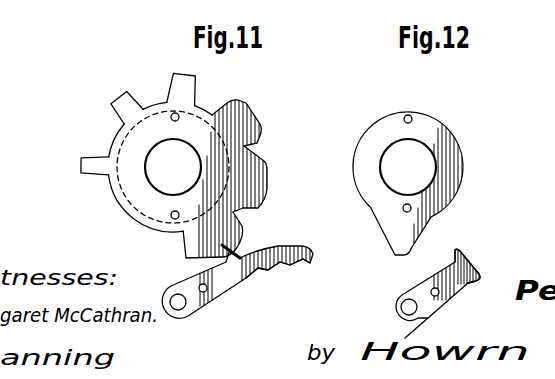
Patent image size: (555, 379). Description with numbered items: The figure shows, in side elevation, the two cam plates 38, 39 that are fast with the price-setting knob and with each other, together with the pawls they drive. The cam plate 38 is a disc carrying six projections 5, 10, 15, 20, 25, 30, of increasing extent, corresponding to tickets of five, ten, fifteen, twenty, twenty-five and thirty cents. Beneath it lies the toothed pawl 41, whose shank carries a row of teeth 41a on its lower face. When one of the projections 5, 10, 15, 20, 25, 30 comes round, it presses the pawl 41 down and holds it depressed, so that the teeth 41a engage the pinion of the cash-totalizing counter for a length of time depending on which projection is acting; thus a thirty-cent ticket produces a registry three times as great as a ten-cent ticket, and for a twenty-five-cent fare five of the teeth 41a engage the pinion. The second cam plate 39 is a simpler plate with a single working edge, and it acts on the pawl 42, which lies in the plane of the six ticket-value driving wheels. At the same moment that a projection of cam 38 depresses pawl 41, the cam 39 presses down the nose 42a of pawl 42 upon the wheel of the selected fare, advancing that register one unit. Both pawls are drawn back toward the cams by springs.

In FIG. 11, the cam projection for five-cent tickets 5 is at (95, 166).
In FIG. 11, the cam projection for ten-cent tickets 10 is at (127, 108).
In FIG. 11, the cam projection for fifteen-cent tickets 15 is at (181, 89).
In FIG. 11, the cam projection for twenty-cent tickets 20 is at (236, 123).
In FIG. 11, the cam projection for twenty-five-cent tickets 25 is at (250, 179).
In FIG. 11, the cam projection for thirty-cent tickets 30 is at (212, 235).
In FIG. 11, the cam plate 38 is at (199, 178).
In FIG. 12, the cam plate 39 is at (365, 141).
In FIG. 11, the toothed pawl 41 is at (237, 280).
In FIG. 11, the teeth 41a is at (292, 268).
In FIG. 12, the pawl 42 is at (438, 293).
In FIG. 12, the nose 42a is at (482, 278).